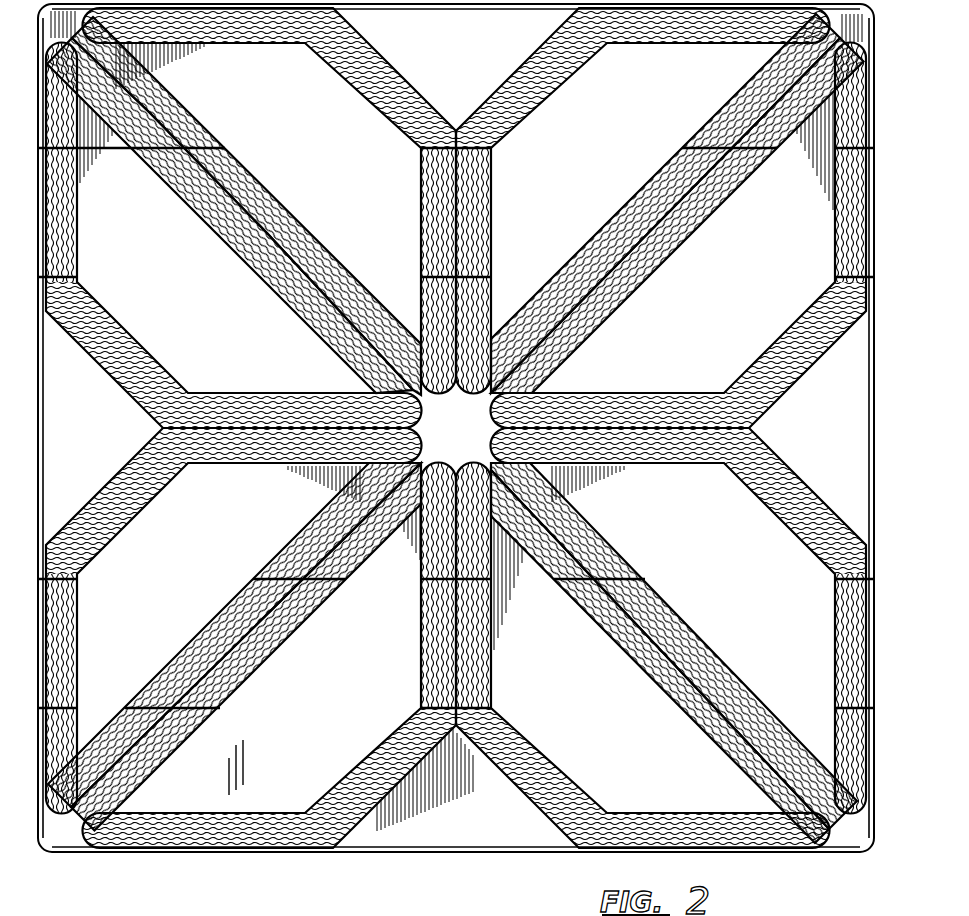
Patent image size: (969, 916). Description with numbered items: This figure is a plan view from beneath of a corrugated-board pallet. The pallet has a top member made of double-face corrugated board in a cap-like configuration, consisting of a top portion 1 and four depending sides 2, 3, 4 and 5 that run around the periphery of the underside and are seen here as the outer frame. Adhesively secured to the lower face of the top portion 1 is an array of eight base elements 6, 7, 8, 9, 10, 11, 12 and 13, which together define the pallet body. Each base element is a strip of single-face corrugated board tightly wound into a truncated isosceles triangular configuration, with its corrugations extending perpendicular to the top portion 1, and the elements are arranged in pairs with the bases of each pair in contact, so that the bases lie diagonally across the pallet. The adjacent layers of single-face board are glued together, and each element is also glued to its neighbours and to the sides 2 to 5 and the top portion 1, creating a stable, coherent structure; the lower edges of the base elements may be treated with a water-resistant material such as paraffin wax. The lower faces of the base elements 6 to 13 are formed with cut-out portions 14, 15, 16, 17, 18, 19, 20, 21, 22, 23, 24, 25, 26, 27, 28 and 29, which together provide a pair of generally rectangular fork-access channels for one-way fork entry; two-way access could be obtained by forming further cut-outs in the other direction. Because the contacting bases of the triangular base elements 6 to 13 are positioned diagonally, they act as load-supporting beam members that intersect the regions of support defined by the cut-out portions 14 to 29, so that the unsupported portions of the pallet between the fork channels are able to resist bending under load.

The top portion 1 is at (682, 522).
The depending side 2 is at (478, 8).
The depending side 3 is at (866, 427).
The depending side 4 is at (490, 846).
The depending side 5 is at (46, 438).
The base element 6 is at (287, 201).
The base element 7 is at (643, 201).
The base element 8 is at (683, 235).
The base element 9 is at (683, 621).
The base element 10 is at (643, 656).
The base element 11 is at (287, 656).
The base element 12 is at (230, 621).
The base element 13 is at (230, 235).
The cut-out portion 14 is at (77, 255).
The cut-out portion 15 is at (165, 172).
The cut-out portion 16 is at (233, 148).
The cut-out portion 17 is at (421, 182).
The cut-out portion 18 is at (489, 181).
The cut-out portion 19 is at (646, 166).
The cut-out portion 20 is at (748, 153).
The cut-out portion 21 is at (835, 192).
The cut-out portion 22 is at (840, 598).
The cut-out portion 23 is at (706, 645).
The cut-out portion 24 is at (594, 617).
The cut-out portion 25 is at (493, 614).
The cut-out portion 26 is at (420, 614).
The cut-out portion 27 is at (312, 604).
The cut-out portion 28 is at (232, 603).
The cut-out portion 29 is at (75, 607).